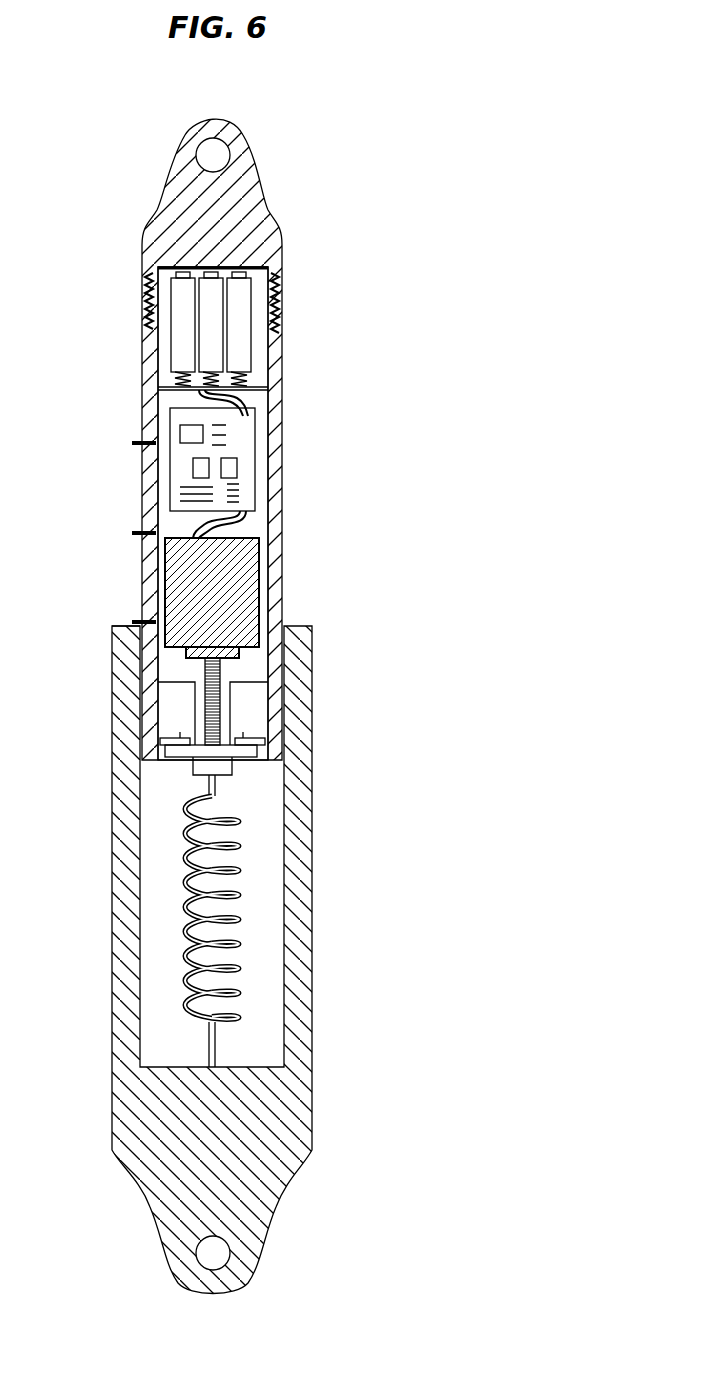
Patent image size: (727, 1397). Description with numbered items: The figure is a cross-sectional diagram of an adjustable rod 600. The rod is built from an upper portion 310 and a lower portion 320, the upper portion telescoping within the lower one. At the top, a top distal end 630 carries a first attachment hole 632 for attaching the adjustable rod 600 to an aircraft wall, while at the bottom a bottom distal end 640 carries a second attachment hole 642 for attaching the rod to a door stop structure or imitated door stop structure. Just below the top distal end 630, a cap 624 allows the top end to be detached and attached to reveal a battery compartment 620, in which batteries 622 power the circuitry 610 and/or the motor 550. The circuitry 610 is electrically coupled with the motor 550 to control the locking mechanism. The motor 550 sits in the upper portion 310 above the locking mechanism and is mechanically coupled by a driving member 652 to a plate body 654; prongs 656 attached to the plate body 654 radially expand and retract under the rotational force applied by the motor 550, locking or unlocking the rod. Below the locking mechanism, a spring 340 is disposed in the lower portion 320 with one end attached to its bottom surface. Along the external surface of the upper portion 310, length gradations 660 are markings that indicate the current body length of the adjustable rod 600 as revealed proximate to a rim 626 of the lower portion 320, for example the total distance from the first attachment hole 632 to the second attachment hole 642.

The adjustable rod 600 is at (574, 209).
The top distal end 630 is at (273, 198).
The first attachment hole 632 is at (216, 150).
The upper portion 310 is at (142, 375).
The circuitry 610 is at (250, 513).
The cap 624 is at (147, 280).
The battery compartment 620 is at (263, 329).
The batteries 622 is at (243, 348).
The length gradations 660 is at (120, 443).
The rim 626 is at (105, 613).
The motor 550 is at (240, 576).
The driving member 652 is at (220, 676).
The prongs 656 is at (256, 735).
The plate body 654 is at (247, 760).
The lower portion 320 is at (112, 841).
The spring 340 is at (238, 862).
The bottom distal end 640 is at (276, 1210).
The second attachment hole 642 is at (208, 1253).